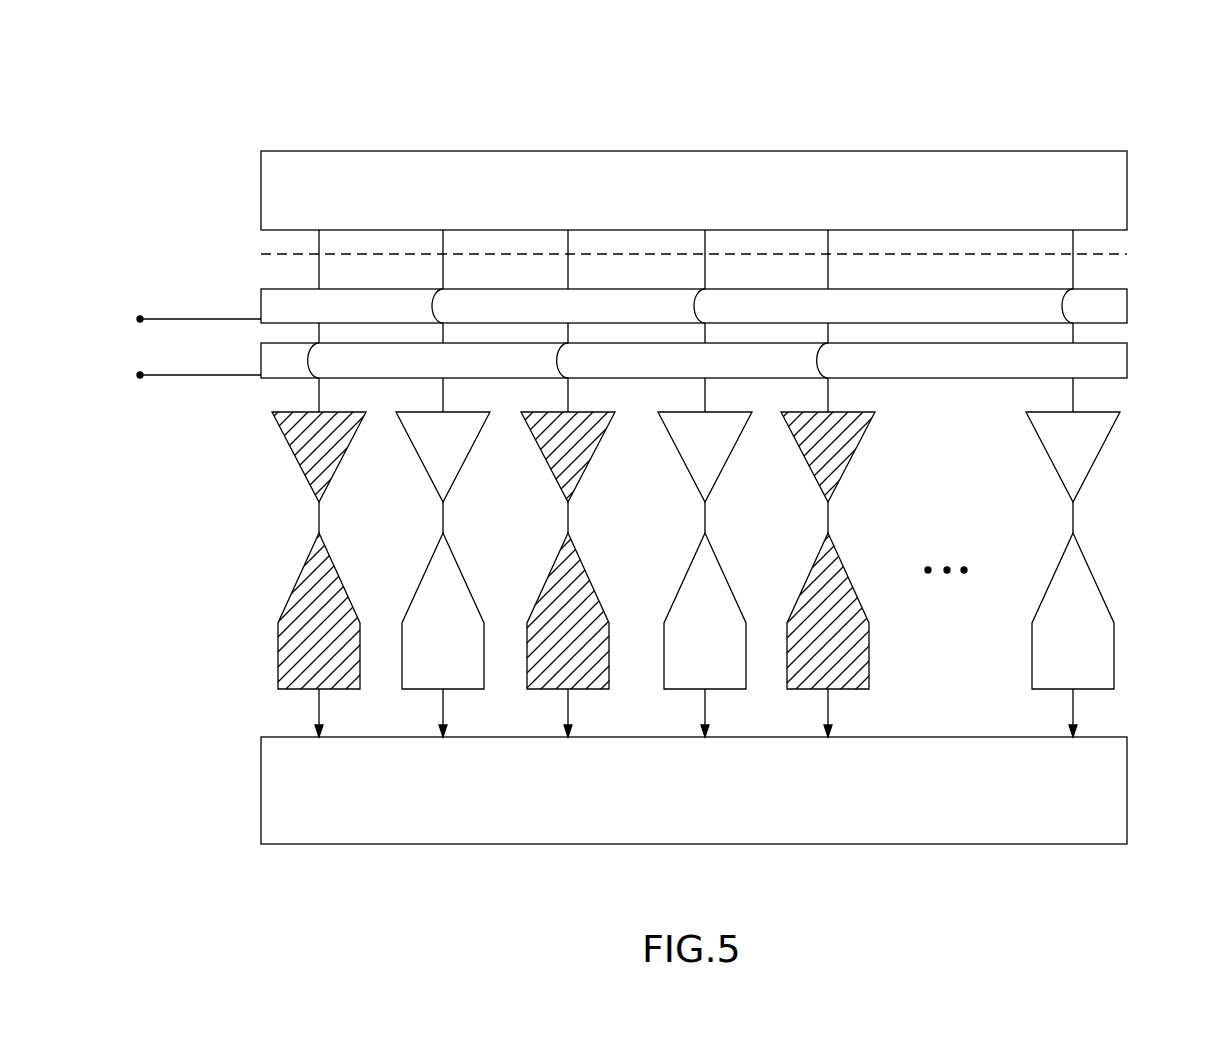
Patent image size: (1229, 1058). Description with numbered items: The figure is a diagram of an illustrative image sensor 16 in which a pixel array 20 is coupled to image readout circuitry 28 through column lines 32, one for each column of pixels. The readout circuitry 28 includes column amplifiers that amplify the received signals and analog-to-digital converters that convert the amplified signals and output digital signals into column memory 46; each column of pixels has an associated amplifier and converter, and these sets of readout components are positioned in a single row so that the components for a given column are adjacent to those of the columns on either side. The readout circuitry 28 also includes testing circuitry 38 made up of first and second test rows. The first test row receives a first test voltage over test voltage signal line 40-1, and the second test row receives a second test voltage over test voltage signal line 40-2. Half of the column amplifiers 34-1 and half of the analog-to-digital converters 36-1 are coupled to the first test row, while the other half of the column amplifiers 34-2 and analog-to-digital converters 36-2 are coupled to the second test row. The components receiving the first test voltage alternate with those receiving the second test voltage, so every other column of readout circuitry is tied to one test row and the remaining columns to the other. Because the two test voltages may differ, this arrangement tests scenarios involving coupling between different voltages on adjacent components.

The image sensor 16 is at (1083, 112).
The pixel array 20 is at (993, 150).
The image readout circuitry 28 is at (1099, 863).
The column line 32 is at (443, 268).
The column amplifiers 34-1 is at (597, 450).
The column amplifiers 34-2 is at (417, 457).
The analog-to-digital converters 36-1 is at (560, 549).
The analog-to-digital converters 36-2 is at (418, 588).
The testing circuitry 38 is at (1135, 378).
The test voltage signal line 40-1 is at (232, 320).
The test voltage signal line 40-2 is at (238, 378).
The column memory 46 is at (1050, 844).